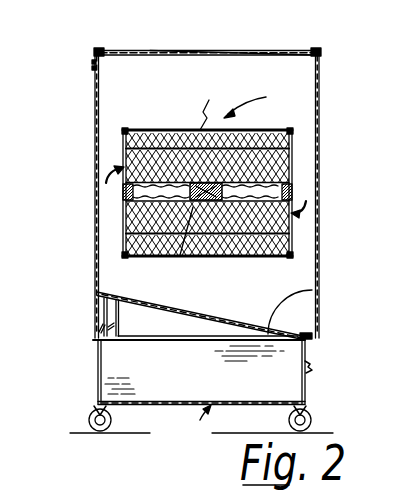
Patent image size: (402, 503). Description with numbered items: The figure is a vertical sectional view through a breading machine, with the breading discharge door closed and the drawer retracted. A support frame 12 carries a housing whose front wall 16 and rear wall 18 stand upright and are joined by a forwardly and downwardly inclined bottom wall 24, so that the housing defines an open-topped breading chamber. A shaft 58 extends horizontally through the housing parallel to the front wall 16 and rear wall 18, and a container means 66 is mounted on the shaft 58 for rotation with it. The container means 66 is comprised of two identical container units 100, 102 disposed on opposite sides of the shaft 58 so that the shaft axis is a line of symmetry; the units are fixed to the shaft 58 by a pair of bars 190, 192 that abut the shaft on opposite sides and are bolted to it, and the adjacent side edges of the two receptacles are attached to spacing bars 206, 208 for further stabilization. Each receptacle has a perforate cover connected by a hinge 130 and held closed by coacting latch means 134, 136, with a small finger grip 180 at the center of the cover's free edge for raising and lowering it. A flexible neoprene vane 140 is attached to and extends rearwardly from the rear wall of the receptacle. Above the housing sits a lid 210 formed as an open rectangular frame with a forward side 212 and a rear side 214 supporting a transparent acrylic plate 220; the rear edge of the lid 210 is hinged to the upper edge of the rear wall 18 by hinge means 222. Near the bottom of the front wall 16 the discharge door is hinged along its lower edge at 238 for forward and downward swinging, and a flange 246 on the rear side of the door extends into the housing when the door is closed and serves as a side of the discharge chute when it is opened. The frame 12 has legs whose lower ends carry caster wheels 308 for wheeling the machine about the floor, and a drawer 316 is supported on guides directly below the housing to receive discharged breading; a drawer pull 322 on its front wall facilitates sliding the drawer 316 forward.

The support frame 12 is at (92, 328).
The front wall 16 is at (319, 170).
The rear wall 18 is at (95, 97).
The bottom wall 24 is at (203, 336).
The shaft 58 is at (200, 200).
The container means 66 is at (259, 102).
The container unit 100 is at (286, 251).
The container unit 102 is at (216, 104).
The hinge 130 is at (126, 130).
The latch means 134 is at (292, 140).
The latch means 136 is at (291, 130).
The vane 140 is at (95, 165).
The finger grip 180 is at (287, 130).
The bar 190 is at (181, 256).
The bar 192 is at (233, 257).
The spacing bar 206 is at (123, 190).
The spacing bar 208 is at (292, 191).
The lid 210 is at (182, 51).
The forward side 212 is at (312, 50).
The rear side 214 is at (104, 50).
The transparent plate 220 is at (237, 51).
The hinge means 222 is at (92, 66).
The door hinge 238 is at (312, 337).
The flange 246 is at (297, 312).
The caster wheels 308 is at (89, 419).
The drawer 316 is at (199, 417).
The drawer pulls 322 is at (311, 367).